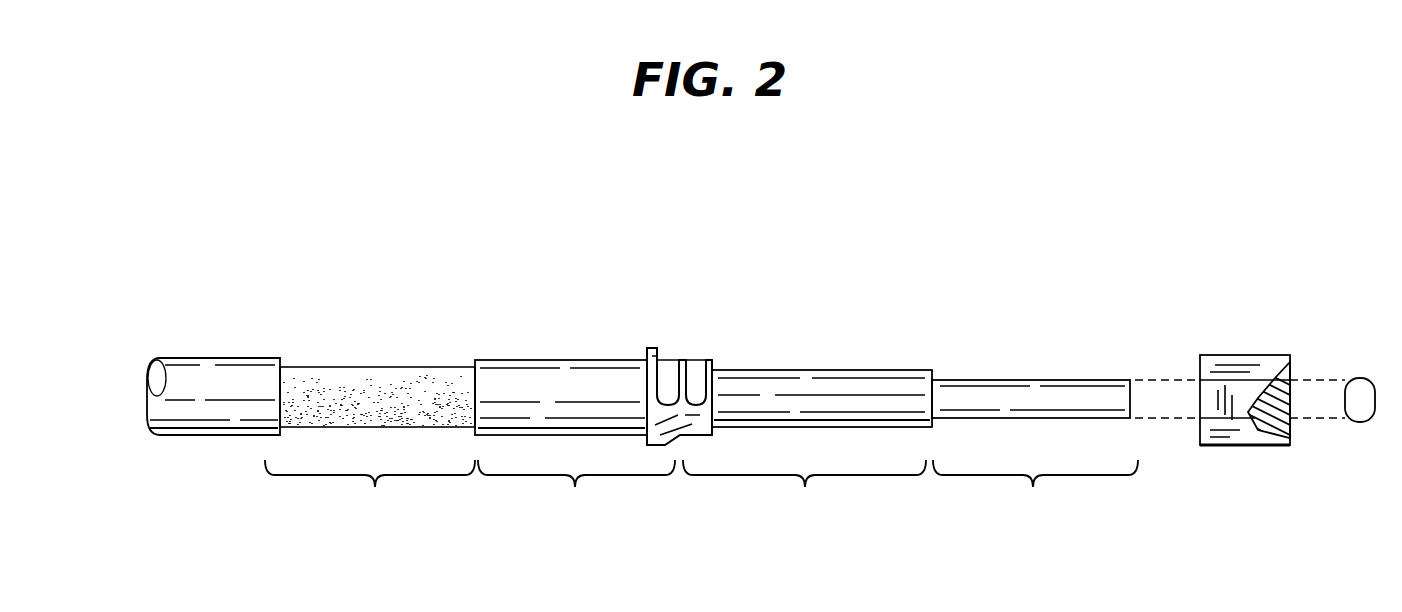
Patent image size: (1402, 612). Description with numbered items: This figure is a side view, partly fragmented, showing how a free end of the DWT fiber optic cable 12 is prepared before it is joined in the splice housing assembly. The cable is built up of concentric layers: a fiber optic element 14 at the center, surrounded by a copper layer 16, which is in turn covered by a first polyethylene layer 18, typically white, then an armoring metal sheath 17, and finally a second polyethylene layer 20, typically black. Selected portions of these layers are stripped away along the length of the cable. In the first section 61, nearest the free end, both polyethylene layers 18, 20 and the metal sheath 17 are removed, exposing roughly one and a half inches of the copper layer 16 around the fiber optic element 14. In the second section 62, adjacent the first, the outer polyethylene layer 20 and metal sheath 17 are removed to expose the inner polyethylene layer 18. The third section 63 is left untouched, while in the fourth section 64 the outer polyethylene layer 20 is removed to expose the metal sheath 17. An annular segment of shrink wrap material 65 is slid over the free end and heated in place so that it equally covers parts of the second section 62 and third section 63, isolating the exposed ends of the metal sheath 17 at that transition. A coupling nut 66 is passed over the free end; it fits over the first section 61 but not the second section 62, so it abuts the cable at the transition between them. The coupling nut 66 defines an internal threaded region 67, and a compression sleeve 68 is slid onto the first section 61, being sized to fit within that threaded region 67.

The DWT fiber optic cable 12 is at (191, 346).
The fiber optic element 14 is at (1135, 378).
The copper layer 16 is at (1005, 378).
The metal sheath 17 is at (345, 365).
The first polyethylene layer 18 is at (790, 367).
The second polyethylene layer 20 is at (543, 360).
The first section 61 is at (1035, 497).
The second section 62 is at (804, 497).
The third section 63 is at (576, 497).
The fourth section 64 is at (370, 497).
The shrink wrap material 65 is at (724, 388).
The coupling nut 66 is at (1235, 355).
The internal threaded region 67 is at (1296, 378).
The compression sleeve 68 is at (1362, 422).